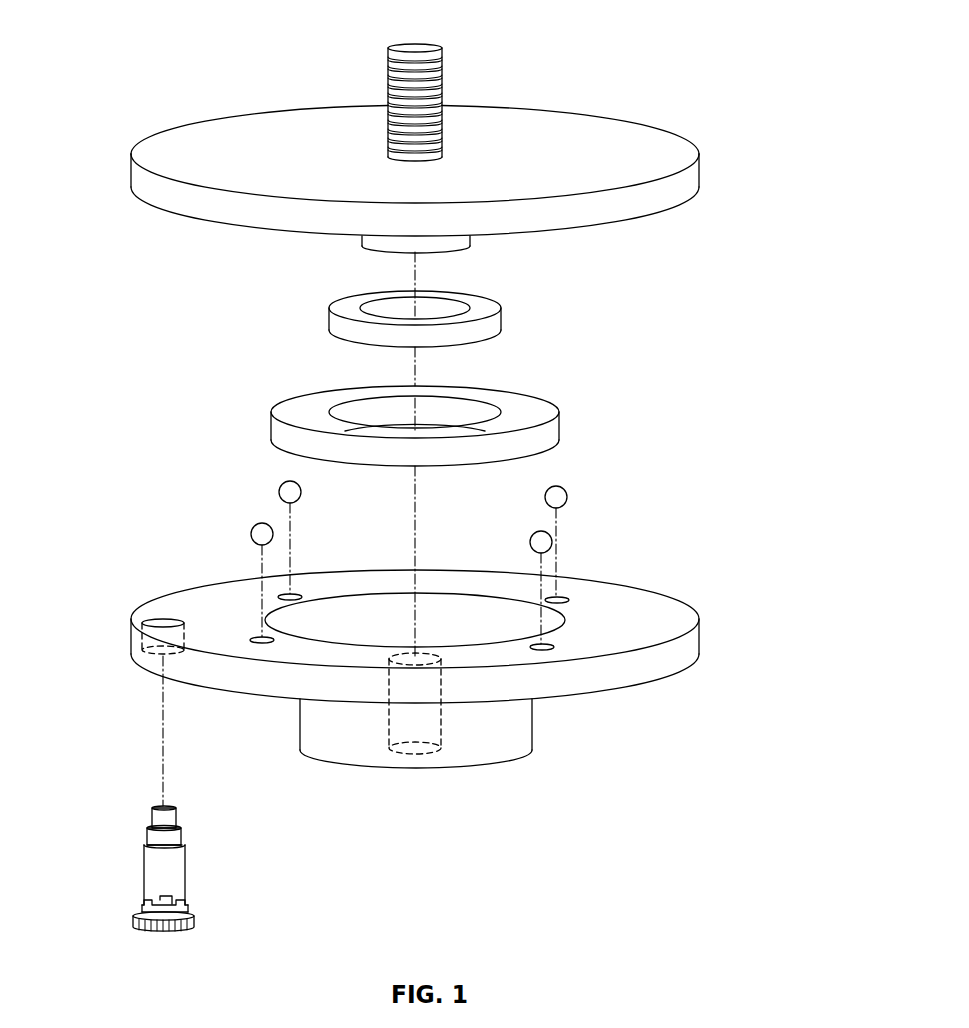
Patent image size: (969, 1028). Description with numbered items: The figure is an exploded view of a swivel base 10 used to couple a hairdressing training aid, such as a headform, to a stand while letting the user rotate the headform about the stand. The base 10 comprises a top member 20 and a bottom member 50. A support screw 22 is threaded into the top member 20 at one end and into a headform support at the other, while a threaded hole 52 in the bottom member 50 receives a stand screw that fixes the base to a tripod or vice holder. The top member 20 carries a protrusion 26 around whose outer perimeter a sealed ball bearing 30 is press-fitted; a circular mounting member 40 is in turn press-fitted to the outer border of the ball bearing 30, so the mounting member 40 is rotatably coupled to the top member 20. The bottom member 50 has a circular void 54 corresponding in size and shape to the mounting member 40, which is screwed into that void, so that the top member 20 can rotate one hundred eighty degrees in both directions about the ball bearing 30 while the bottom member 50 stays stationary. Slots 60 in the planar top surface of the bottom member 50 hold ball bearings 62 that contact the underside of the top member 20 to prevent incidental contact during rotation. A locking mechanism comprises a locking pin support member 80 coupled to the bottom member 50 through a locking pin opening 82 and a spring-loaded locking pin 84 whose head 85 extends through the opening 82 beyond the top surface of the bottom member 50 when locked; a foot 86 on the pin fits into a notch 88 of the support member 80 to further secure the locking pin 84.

The swivel base 10 is at (745, 43).
The top member 20 is at (633, 163).
The support screw 22 is at (388, 68).
The protrusion 26 is at (470, 243).
The ball bearing 30 is at (503, 320).
The circular mounting member 40 is at (561, 428).
The bottom member 50 is at (672, 620).
The threaded hole 52 is at (418, 754).
The circular void 54 is at (432, 642).
The slots 60 is at (550, 645).
The ball bearings 62 is at (283, 490).
The locking pin support member 80 is at (157, 878).
The locking pin opening 82 is at (132, 651).
The locking pin 84 is at (135, 920).
The head 85 is at (160, 818).
The foot 86 is at (147, 905).
The notch 88 is at (175, 904).